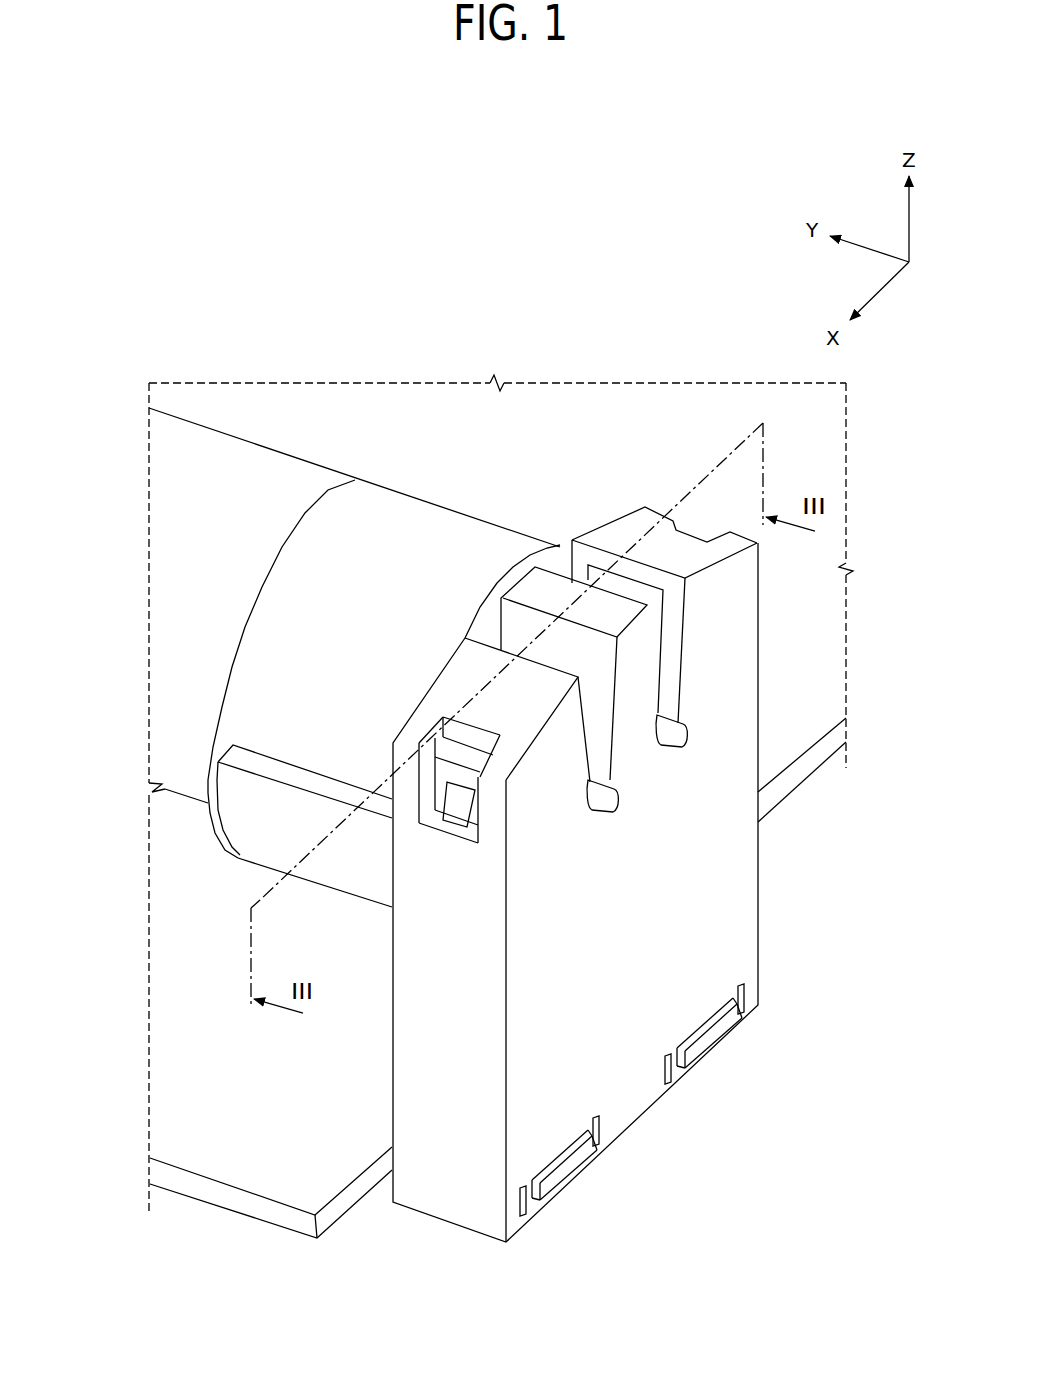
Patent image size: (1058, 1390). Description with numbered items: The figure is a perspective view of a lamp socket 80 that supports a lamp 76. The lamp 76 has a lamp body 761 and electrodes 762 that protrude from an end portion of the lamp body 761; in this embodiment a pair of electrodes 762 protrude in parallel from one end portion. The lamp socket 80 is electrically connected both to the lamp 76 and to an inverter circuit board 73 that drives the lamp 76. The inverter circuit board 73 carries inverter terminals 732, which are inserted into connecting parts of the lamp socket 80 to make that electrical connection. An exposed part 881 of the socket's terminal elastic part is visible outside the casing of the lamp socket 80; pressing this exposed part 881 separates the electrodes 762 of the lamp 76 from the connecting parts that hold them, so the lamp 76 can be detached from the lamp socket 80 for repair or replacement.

The lamp 76 is at (354, 613).
The lamp body 761 is at (280, 470).
The electrodes 762 is at (692, 738).
The lamp socket 80 is at (427, 1222).
The exposed part of the terminal elastic part 881 is at (612, 580).
The inverter terminals 732 is at (570, 1167).
The inverter circuit board 73 is at (242, 1222).